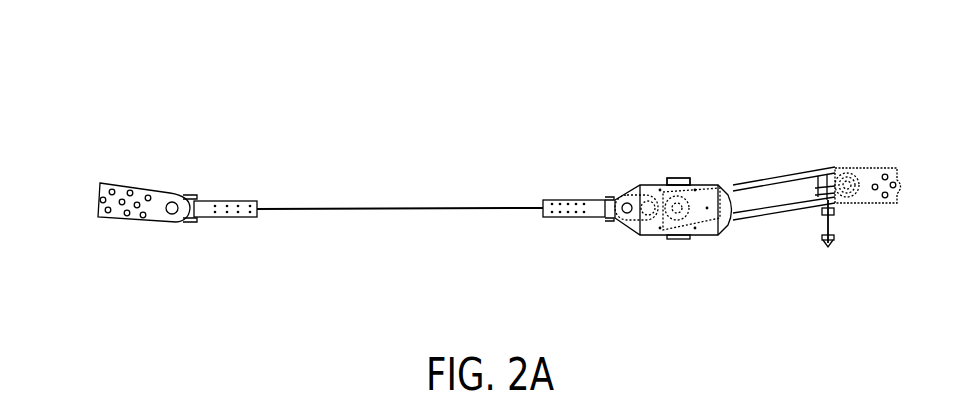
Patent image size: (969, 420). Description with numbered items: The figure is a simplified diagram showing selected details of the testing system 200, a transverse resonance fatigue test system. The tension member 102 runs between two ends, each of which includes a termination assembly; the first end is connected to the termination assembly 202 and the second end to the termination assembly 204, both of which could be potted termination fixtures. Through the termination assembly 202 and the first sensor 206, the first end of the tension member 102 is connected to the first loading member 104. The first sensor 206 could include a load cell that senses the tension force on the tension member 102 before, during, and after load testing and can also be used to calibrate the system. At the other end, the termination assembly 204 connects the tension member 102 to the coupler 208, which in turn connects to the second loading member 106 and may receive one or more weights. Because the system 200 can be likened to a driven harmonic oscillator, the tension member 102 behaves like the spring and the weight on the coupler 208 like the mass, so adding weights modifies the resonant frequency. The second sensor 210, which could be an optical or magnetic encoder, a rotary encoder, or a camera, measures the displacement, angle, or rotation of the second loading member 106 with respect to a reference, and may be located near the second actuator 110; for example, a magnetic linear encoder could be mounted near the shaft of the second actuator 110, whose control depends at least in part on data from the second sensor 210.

The testing system 200 is at (598, 82).
The tension member 102 is at (360, 210).
The first loading member 104 is at (95, 200).
The second loading member 106 is at (739, 219).
The second actuator 110 is at (822, 230).
The termination assembly 202 is at (258, 188).
The termination assembly 204 is at (567, 196).
The first sensor 206 is at (173, 217).
The coupler 208 is at (697, 183).
The second sensor 210 is at (846, 183).